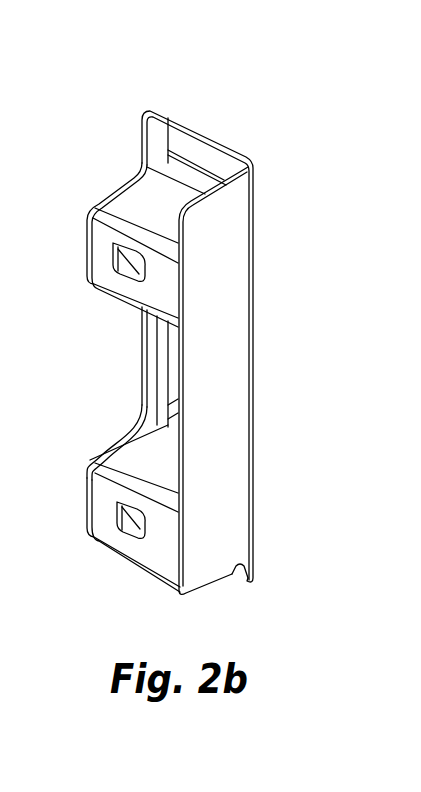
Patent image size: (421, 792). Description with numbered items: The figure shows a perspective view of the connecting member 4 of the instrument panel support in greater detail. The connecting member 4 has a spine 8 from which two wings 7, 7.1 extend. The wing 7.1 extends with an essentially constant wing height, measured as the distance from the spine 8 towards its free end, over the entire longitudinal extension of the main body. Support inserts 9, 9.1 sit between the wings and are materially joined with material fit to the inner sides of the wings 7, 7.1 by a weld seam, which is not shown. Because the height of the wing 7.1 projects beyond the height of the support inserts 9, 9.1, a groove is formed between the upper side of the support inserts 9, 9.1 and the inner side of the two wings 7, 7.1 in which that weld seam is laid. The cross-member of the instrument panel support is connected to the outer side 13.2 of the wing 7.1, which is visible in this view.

The connecting member 4 is at (125, 157).
The wing 7 is at (148, 363).
The wing 7.1 is at (180, 452).
The spine 8 is at (225, 143).
The support insert 9 is at (148, 192).
The support insert 9.1 is at (114, 525).
The outer side 13.2 is at (243, 403).